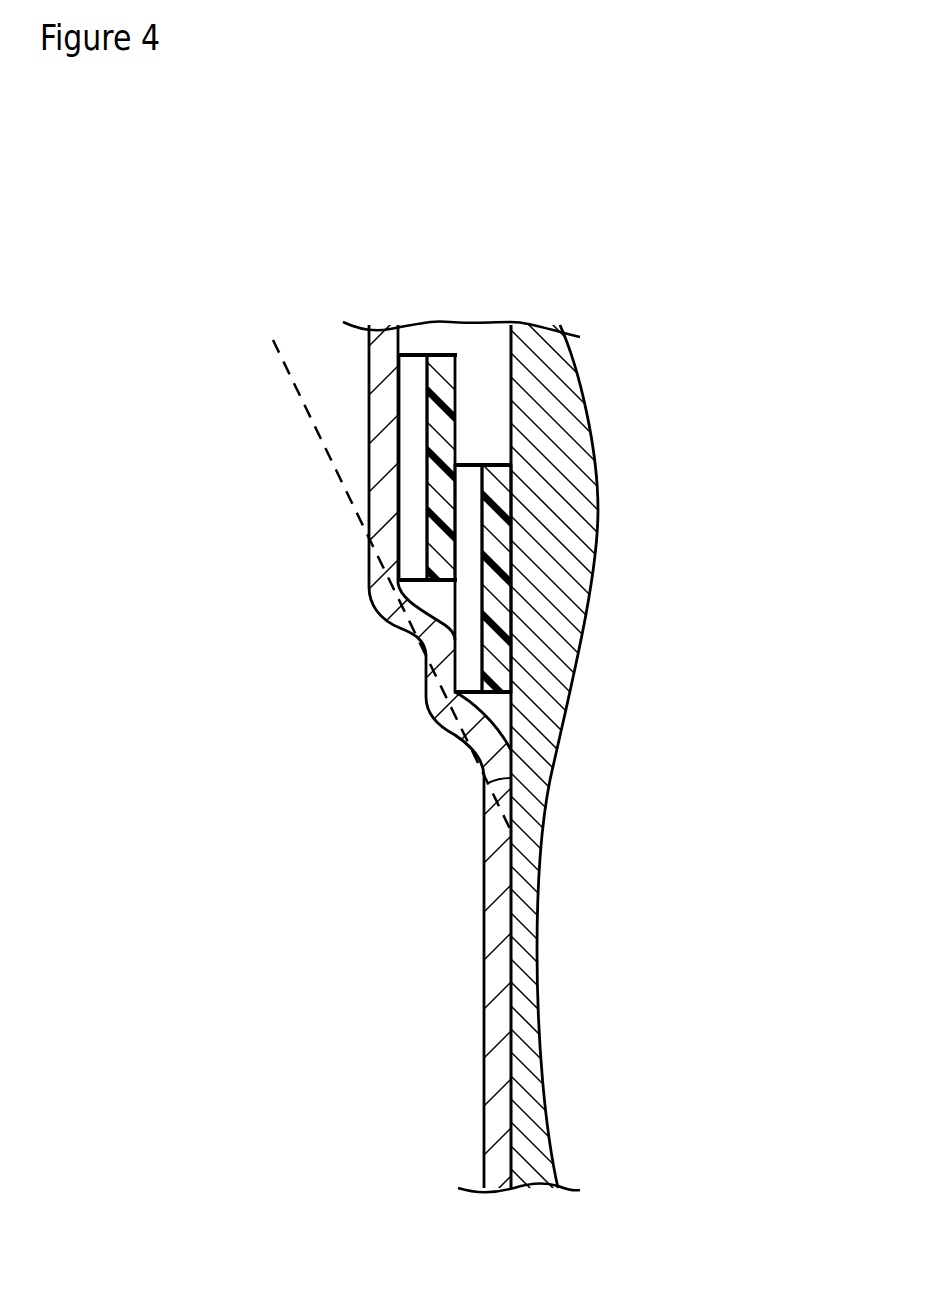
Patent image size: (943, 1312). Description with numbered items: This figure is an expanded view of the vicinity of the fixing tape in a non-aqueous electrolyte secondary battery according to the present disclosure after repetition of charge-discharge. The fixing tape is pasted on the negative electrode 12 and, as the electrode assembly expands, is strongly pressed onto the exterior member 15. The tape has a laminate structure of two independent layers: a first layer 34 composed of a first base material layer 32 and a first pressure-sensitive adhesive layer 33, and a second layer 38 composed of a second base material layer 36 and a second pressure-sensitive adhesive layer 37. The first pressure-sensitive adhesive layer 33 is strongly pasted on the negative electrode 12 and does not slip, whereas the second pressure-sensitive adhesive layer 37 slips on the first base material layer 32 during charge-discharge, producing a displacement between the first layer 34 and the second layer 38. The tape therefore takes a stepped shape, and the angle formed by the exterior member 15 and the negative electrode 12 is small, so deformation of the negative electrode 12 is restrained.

The negative electrode 12 is at (383, 353).
The exterior member 15 is at (568, 466).
The first base material layer 32 is at (440, 380).
The first pressure-sensitive adhesive layer 33 is at (412, 373).
The first layer 34 is at (431, 372).
The second base material layer 36 is at (502, 628).
The second pressure-sensitive adhesive layer 37 is at (468, 552).
The second layer 38 is at (532, 575).